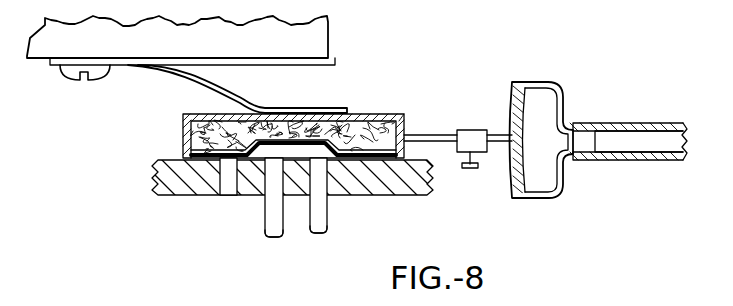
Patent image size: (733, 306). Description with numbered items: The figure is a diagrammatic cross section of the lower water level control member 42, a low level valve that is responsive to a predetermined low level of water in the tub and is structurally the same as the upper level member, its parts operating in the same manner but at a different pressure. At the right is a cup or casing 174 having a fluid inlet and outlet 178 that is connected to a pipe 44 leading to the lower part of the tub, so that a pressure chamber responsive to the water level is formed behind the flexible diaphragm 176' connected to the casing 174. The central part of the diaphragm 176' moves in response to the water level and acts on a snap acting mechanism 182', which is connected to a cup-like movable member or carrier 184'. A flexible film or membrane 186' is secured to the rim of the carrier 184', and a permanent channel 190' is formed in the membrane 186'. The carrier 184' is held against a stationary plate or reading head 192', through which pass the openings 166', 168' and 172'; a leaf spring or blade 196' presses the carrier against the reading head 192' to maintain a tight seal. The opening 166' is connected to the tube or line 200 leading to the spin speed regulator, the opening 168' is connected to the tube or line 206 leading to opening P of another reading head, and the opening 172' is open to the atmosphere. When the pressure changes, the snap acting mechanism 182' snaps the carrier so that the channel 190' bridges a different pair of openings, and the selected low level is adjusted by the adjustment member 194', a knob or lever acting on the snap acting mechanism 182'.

The lower water level control member 42 is at (643, 77).
The pipe 44 is at (632, 140).
The opening 166' is at (347, 195).
The opening 168' is at (255, 197).
The opening 172' is at (206, 195).
The cup or casing 174 is at (566, 183).
The flexible diaphragm 176' is at (559, 134).
The fluid inlet and outlet 178 is at (574, 123).
The snap acting mechanism 182' is at (458, 117).
The movable member or carrier 184' is at (298, 120).
The flexible film or membrane 186' is at (256, 136).
The permanent channel 190' is at (293, 119).
The stationary plate or reading head 192' is at (289, 196).
The adjustment member 194' is at (477, 192).
The leaf spring or blade 196' is at (237, 89).
The tube or line 200 is at (327, 222).
The tube or line 206 is at (270, 232).